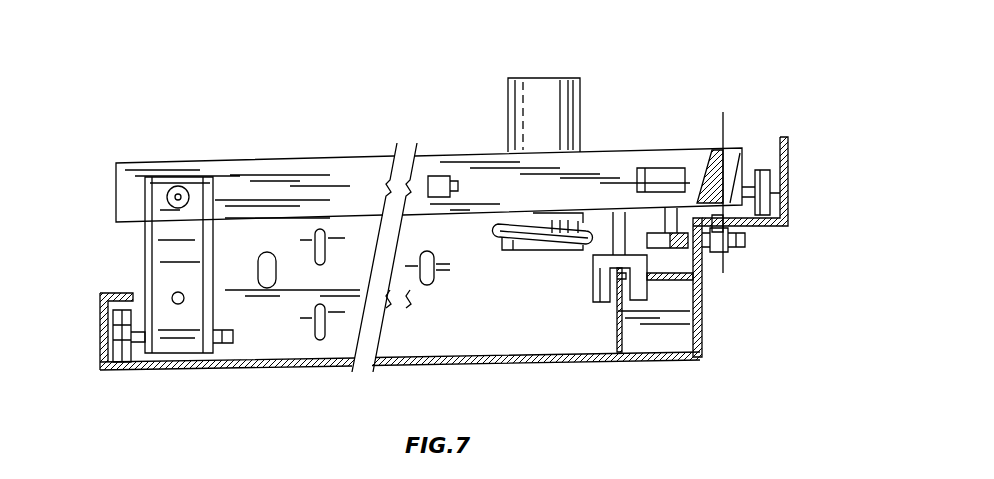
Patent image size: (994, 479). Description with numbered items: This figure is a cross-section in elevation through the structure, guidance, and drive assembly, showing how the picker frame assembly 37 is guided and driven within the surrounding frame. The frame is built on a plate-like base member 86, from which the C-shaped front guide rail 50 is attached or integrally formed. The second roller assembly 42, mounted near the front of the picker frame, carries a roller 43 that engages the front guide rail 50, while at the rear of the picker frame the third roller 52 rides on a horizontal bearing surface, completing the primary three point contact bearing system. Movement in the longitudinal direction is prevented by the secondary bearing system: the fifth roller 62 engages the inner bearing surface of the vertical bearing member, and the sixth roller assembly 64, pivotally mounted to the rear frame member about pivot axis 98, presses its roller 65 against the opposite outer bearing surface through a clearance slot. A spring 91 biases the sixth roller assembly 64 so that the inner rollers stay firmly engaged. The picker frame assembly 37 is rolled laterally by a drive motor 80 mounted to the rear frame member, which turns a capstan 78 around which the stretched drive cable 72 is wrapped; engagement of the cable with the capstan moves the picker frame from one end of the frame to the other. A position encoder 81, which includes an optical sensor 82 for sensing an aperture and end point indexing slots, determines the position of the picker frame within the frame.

The picker frame assembly 37 is at (470, 150).
The drive motor 80 is at (580, 103).
The spring 91 is at (724, 140).
The third roller 52 is at (765, 167).
The drive cable 72 is at (497, 230).
The capstan 78 is at (525, 250).
The optical sensor 82 is at (593, 285).
The fifth roller 62 is at (675, 252).
The roller 65 is at (745, 240).
The sixth roller assembly 64 is at (730, 252).
The pivot axis 98 is at (728, 266).
The position encoder 81 is at (600, 307).
The base member 86 is at (432, 366).
The second roller assembly 42 is at (213, 307).
The roller 43 is at (118, 320).
The front guide rail 50 is at (100, 349).